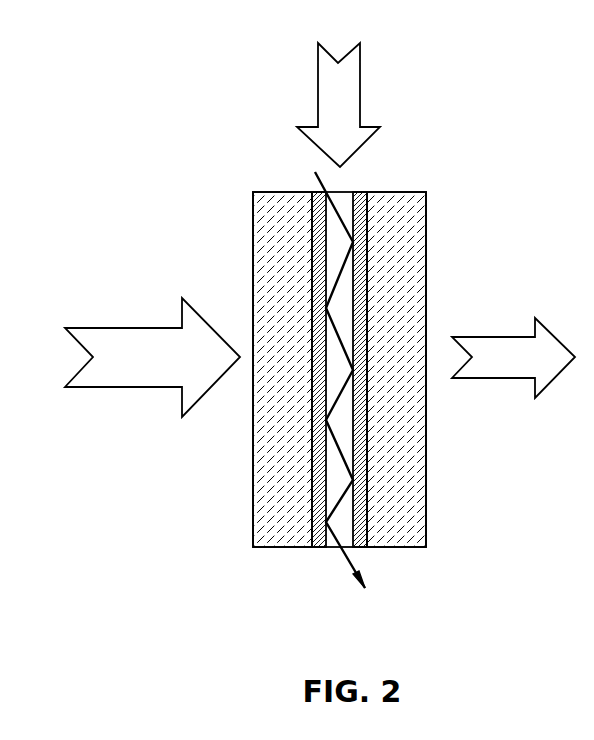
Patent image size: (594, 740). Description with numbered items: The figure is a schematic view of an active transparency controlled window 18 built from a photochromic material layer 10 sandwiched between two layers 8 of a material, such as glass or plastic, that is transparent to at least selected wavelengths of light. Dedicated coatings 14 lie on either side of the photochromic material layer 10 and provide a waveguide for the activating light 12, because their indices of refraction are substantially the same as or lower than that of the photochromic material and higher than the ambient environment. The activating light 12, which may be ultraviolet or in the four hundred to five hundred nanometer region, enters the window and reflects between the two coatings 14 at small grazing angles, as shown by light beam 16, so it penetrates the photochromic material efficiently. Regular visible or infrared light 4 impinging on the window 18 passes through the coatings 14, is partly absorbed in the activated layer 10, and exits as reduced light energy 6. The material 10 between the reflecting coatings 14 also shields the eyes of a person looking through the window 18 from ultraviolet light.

The impinging light 4 is at (478, 337).
The reduced light energy 6 is at (111, 328).
The layers 8 is at (282, 547).
The photochromic material layer 10 is at (347, 191).
The activating light 12 is at (360, 72).
The coatings 14 is at (319, 547).
The light beam 16 is at (343, 567).
The active transparency controlled window 18 is at (415, 350).